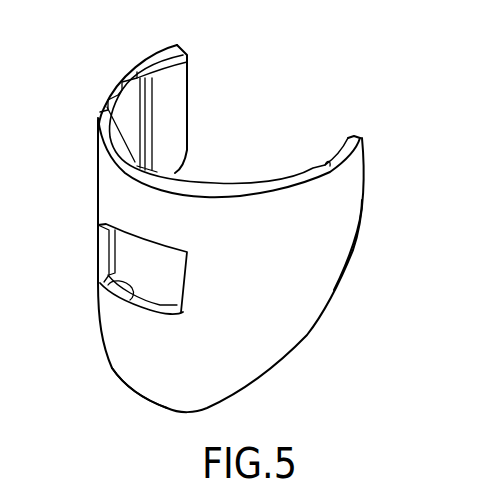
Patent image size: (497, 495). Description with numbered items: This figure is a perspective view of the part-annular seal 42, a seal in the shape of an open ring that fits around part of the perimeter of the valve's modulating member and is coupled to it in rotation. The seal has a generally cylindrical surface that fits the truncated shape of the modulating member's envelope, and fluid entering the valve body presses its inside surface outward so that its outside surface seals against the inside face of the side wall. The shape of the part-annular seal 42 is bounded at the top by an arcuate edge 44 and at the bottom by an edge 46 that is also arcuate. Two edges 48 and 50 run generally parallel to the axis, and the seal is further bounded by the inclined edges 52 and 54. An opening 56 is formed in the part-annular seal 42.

The part-annular seal 42 is at (109, 381).
The arcuate edge 44 is at (105, 128).
The edge 46 is at (147, 398).
The edge 48 is at (189, 89).
The edge 50 is at (364, 180).
The inclined edge 52 is at (180, 172).
The inclined edge 54 is at (326, 309).
The opening 56 is at (104, 283).